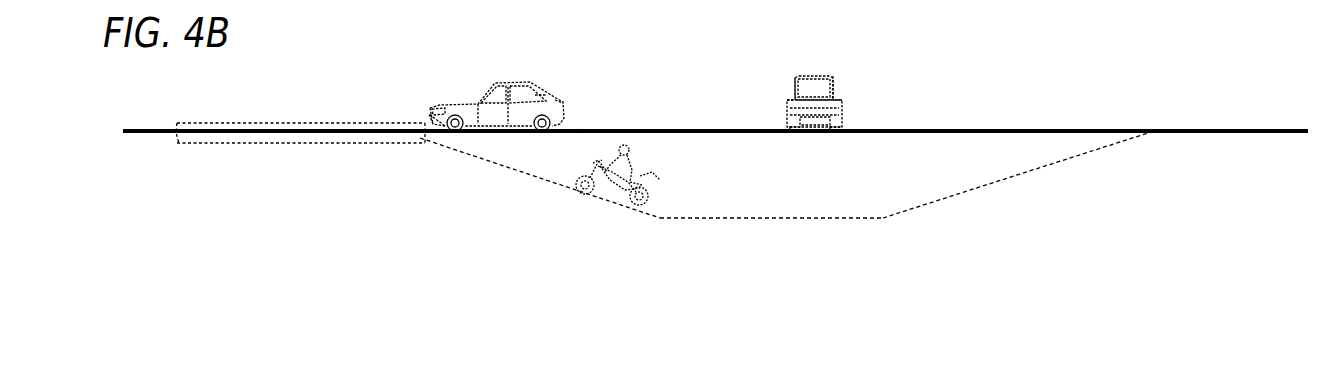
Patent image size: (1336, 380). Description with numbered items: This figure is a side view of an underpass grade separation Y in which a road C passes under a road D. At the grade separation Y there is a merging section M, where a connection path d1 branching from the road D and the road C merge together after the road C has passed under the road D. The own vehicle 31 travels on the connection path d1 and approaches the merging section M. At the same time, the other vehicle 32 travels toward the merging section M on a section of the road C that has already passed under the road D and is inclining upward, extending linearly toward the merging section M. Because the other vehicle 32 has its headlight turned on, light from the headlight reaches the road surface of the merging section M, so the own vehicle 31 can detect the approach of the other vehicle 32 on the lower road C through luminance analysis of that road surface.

The merging section M is at (292, 123).
The own vehicle 31 is at (488, 84).
The connection path d1 is at (578, 129).
The road D is at (742, 129).
The other vehicle 32 is at (645, 176).
The road C is at (742, 217).
The underpass grade separation Y is at (973, 216).